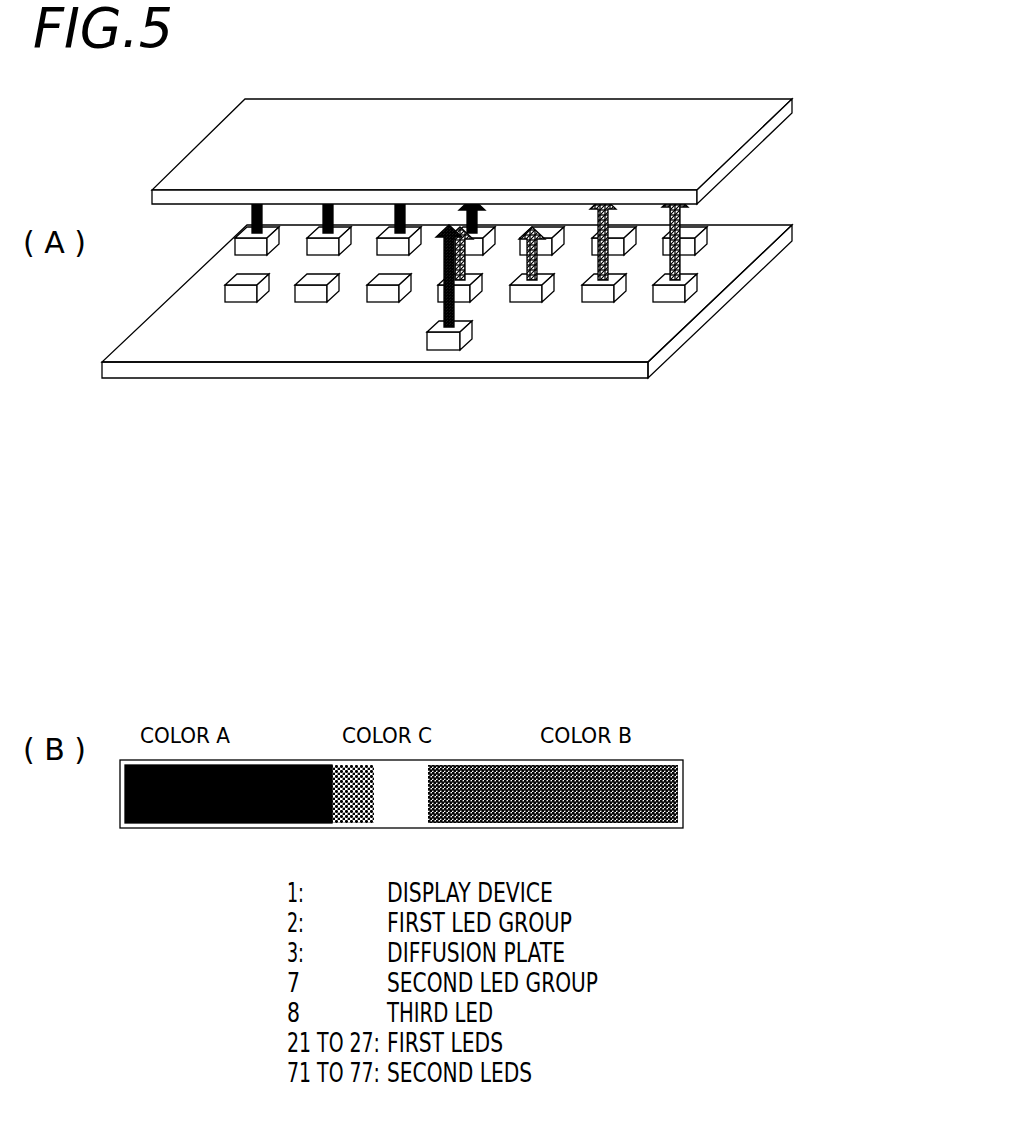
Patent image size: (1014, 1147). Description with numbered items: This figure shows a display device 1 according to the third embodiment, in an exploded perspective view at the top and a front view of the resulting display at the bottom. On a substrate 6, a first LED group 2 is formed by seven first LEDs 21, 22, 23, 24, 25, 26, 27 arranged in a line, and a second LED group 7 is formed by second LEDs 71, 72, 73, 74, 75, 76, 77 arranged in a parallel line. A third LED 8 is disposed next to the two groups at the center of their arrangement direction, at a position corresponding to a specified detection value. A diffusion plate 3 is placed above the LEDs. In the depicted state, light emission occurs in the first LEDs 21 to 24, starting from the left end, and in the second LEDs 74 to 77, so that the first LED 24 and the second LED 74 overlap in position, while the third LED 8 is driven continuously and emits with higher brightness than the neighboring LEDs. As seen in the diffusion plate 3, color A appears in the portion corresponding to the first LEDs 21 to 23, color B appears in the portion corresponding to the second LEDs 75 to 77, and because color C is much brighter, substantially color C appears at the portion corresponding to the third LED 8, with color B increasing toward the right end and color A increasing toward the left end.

The display device 1 is at (720, 85).
The first LED group 2 is at (471, 389).
The diffusion plate 3 is at (652, 120).
The substrate 6 is at (753, 268).
The second LED group 7 is at (503, 412).
The third LED 8 is at (445, 345).
The first LED 21 is at (270, 243).
The first LED 22 is at (340, 243).
The first LED 23 is at (410, 243).
The first LED 24 is at (490, 247).
The first LED 25 is at (558, 242).
The first LED 26 is at (630, 243).
The first LED 27 is at (703, 243).
The second LED 71 is at (238, 302).
The second LED 72 is at (309, 302).
The second LED 73 is at (380, 302).
The second LED 74 is at (474, 290).
The second LED 75 is at (528, 302).
The second LED 76 is at (597, 302).
The second LED 77 is at (670, 302).